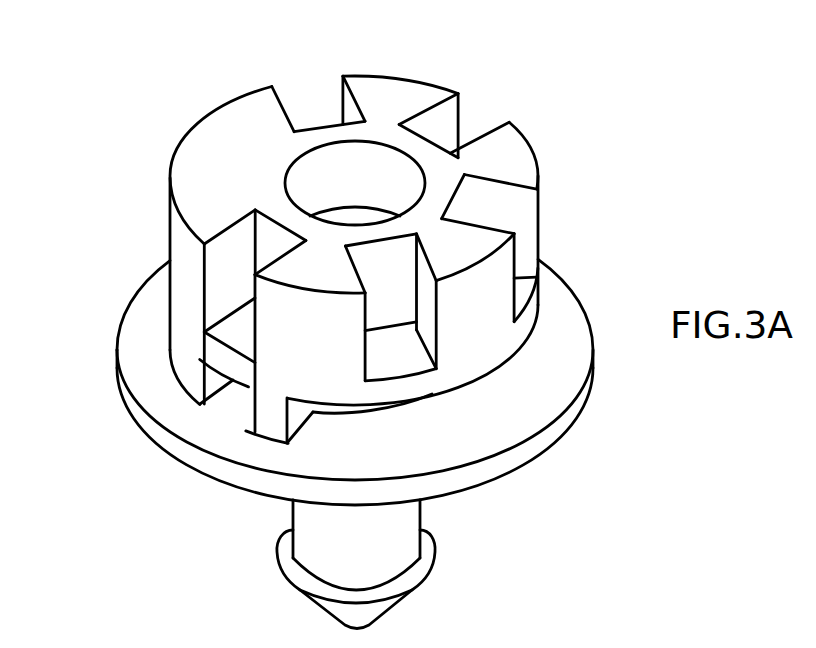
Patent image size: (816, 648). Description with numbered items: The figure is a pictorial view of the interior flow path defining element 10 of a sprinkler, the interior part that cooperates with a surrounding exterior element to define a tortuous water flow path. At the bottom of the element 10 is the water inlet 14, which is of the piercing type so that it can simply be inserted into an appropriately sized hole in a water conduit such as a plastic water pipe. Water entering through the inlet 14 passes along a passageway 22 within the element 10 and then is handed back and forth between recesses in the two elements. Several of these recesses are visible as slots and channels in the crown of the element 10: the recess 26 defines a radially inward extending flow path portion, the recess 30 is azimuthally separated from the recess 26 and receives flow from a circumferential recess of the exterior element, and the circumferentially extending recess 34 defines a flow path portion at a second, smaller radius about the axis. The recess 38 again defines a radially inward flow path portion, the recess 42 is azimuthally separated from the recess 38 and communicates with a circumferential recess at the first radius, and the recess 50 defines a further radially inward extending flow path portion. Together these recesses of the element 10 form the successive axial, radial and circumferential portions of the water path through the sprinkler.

The interior flow path defining element 10 is at (132, 100).
The water inlet 14 is at (383, 522).
The passageway 22 is at (233, 400).
The recess 26 is at (220, 284).
The recess 30 is at (425, 292).
The circumferentially extending recess 34 is at (317, 425).
The recess 38 is at (505, 202).
The recess 42 is at (445, 127).
The recess 50 is at (287, 126).